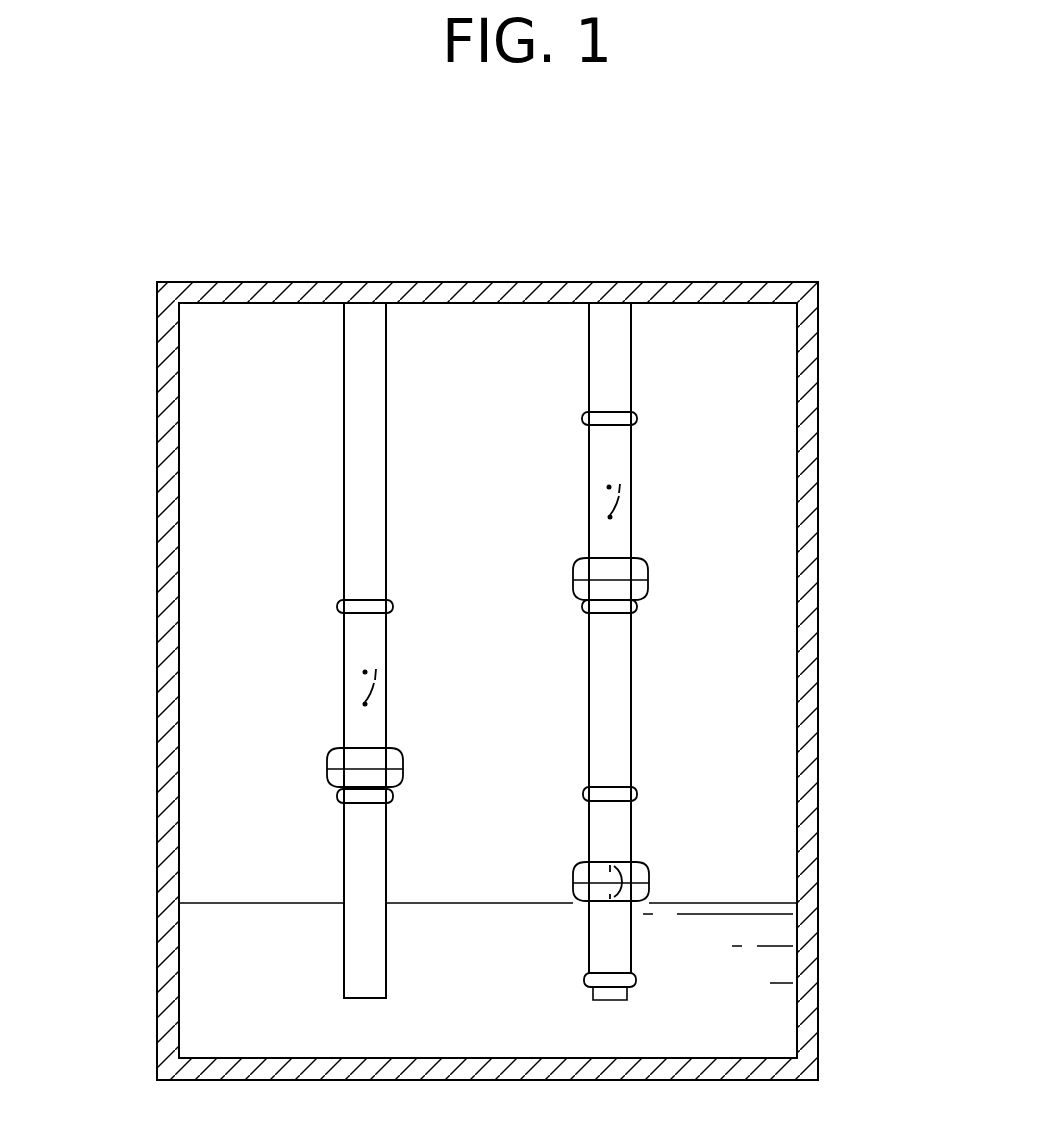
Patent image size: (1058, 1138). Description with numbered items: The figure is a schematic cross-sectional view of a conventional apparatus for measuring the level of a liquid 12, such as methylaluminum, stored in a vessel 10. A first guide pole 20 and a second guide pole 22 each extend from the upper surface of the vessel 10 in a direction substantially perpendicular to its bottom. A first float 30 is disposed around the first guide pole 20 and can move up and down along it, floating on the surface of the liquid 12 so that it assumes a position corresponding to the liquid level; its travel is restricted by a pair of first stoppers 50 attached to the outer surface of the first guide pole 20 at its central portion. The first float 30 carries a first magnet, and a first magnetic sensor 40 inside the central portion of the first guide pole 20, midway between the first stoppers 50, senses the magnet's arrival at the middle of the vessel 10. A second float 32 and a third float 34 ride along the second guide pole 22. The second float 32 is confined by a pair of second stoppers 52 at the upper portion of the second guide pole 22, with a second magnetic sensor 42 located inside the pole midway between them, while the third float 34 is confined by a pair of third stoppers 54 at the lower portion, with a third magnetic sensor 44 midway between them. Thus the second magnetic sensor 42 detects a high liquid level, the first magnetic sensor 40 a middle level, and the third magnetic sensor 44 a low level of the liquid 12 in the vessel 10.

The vessel 10 is at (808, 310).
The liquid 12 is at (778, 1028).
The first guide pole 20 is at (355, 402).
The second guide pole 22 is at (620, 457).
The first float 30 is at (338, 762).
The second float 32 is at (636, 572).
The third float 34 is at (640, 890).
The first magnetic sensor 40 is at (373, 685).
The second magnetic sensor 42 is at (620, 500).
The third magnetic sensor 44 is at (622, 878).
The first stoppers 50 is at (357, 608).
The second stoppers 52 is at (634, 417).
The third stoppers 54 is at (634, 795).